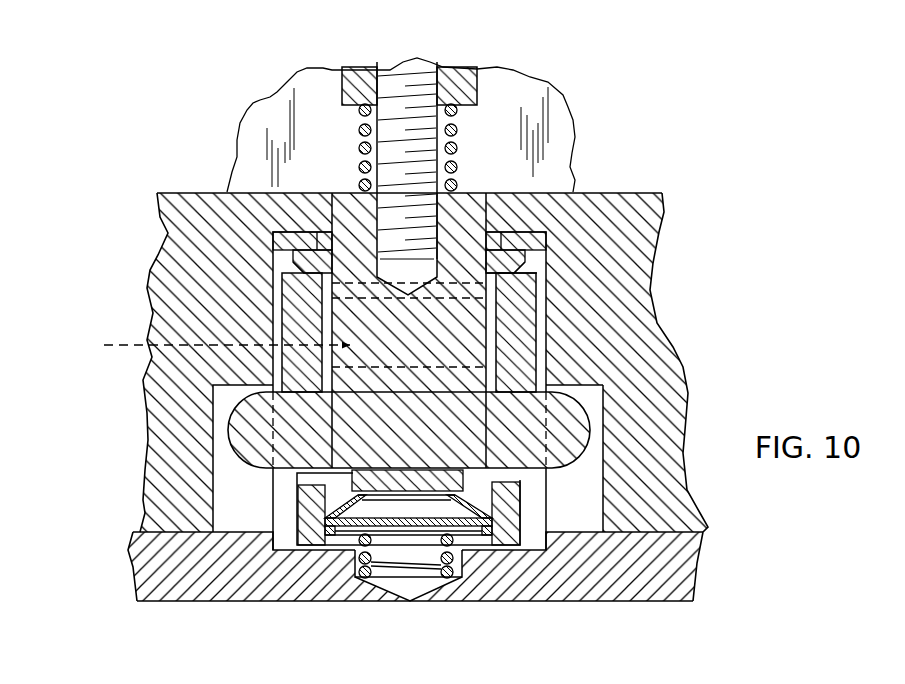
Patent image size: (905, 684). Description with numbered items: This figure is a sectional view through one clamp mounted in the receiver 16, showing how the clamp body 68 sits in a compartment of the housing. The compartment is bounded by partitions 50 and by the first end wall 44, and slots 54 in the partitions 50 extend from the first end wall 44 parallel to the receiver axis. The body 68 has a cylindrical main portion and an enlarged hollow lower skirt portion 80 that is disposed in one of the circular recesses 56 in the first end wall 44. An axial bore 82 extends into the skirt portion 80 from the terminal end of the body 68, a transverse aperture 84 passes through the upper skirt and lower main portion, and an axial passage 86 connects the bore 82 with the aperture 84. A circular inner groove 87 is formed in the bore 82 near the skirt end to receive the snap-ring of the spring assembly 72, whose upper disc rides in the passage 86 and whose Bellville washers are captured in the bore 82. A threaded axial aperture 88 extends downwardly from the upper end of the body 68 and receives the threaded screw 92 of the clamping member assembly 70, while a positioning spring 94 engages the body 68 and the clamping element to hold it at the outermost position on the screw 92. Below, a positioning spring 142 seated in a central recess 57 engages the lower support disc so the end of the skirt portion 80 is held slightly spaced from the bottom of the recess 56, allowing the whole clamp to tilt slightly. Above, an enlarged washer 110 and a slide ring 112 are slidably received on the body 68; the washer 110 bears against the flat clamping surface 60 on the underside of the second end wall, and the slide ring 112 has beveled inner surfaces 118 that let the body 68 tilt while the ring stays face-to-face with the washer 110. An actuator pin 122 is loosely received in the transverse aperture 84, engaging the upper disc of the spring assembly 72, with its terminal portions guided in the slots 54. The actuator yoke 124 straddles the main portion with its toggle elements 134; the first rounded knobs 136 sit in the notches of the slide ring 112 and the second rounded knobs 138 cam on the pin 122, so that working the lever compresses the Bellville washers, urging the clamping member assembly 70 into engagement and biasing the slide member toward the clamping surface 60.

The receiver 16 is at (665, 254).
The first end wall 44 is at (681, 578).
The partitions 50 is at (173, 233).
The slots 54 is at (222, 494).
The recesses 56 is at (493, 551).
The central recesses 57 is at (427, 583).
The clamping surfaces 60 is at (292, 238).
The body 68 is at (348, 315).
The clamping member assembly 70 is at (357, 76).
The spring assembly 72 is at (480, 493).
The lower skirt portion 80 is at (360, 545).
The axial bores 82 is at (330, 530).
The transverse apertures 84 is at (320, 418).
The axial passages 86 is at (327, 500).
The inner grooves 87 is at (495, 524).
The threaded axial apertures 88 is at (440, 222).
The threaded screw 92 is at (417, 106).
The positioning spring 94 is at (458, 148).
The enlarged washer 110 is at (522, 252).
The slide ring 112 is at (517, 266).
The beveled inner surfaces 118 is at (500, 240).
The actuator pin 122 is at (300, 447).
The actuator yoke 124 is at (205, 345).
The toggle elements 134 is at (520, 350).
The first rounded knobs 136 is at (548, 295).
The second rounded knobs 138 is at (548, 383).
The positioning springs 142 is at (360, 558).